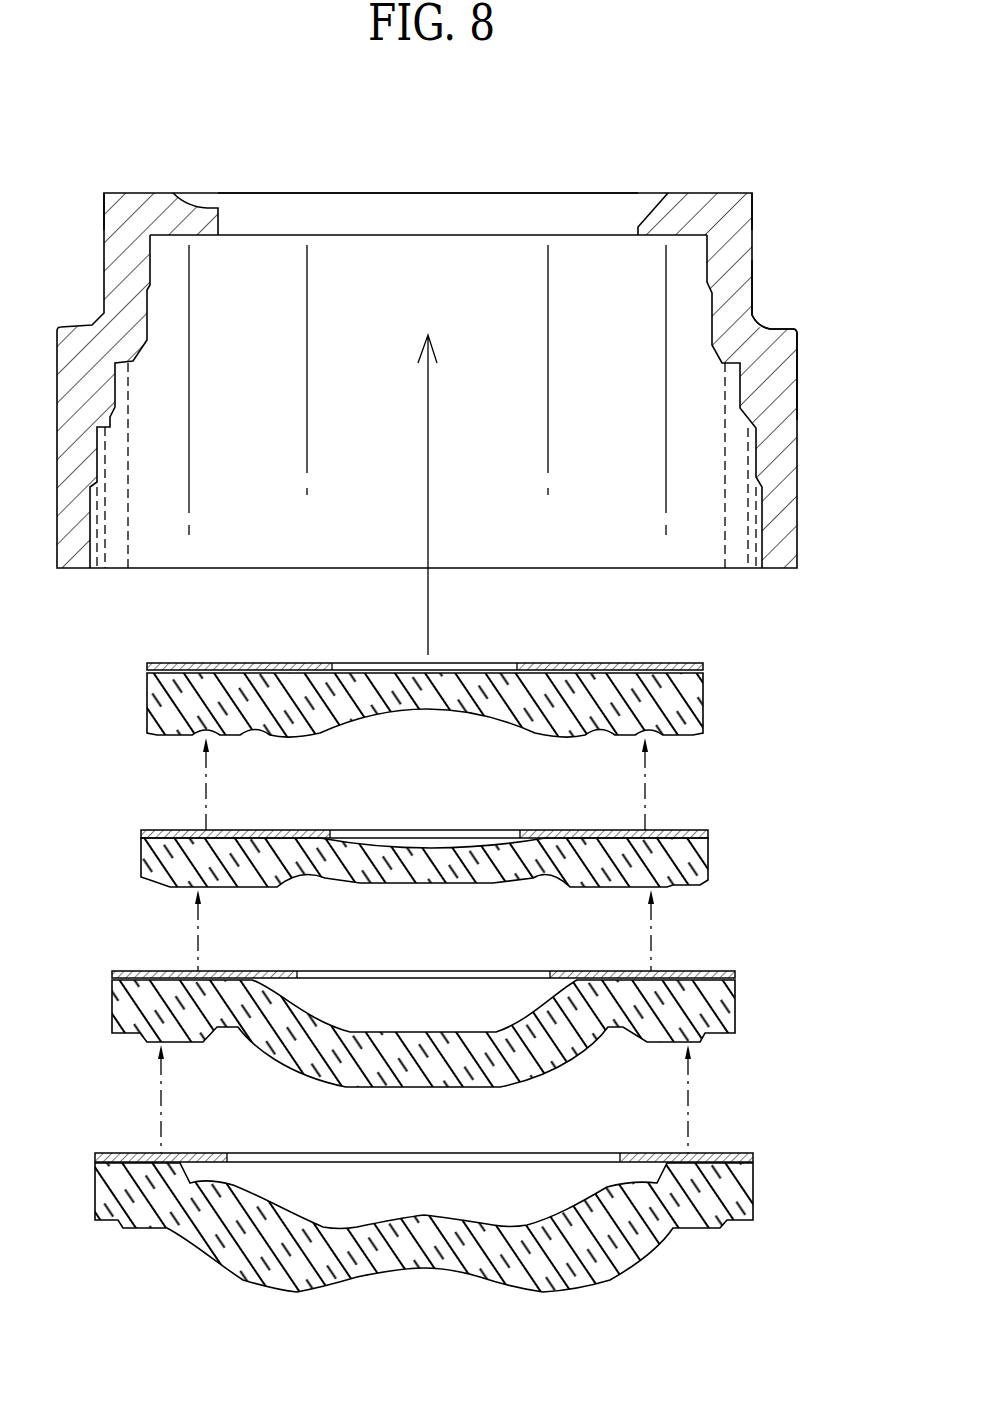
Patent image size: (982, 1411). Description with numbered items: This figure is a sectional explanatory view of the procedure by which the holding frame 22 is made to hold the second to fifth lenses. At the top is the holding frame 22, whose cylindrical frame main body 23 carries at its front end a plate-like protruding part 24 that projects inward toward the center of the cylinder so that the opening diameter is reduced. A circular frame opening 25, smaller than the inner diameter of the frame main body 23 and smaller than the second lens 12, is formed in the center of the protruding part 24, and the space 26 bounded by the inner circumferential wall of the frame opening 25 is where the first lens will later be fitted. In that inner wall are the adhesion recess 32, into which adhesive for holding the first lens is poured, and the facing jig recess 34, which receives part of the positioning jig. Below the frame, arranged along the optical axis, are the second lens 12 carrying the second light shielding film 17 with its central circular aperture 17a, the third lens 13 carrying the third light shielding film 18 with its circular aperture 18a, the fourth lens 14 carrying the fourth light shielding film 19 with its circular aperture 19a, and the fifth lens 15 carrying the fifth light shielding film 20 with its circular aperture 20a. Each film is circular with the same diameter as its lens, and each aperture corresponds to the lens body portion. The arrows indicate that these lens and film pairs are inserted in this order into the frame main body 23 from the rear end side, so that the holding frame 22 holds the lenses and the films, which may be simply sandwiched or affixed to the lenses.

The second lens 12 is at (715, 698).
The third lens 13 is at (720, 858).
The fourth lens 14 is at (750, 1002).
The fifth lens 15 is at (765, 1188).
The second light shielding film 17 is at (447, 652).
The circular aperture 17a is at (470, 663).
The third light shielding film 18 is at (446, 820).
The circular aperture 18a is at (468, 830).
The fourth light shielding film 19 is at (447, 959).
The circular aperture 19a is at (467, 971).
The fifth light shielding film 20 is at (444, 1142).
The circular aperture 20a is at (470, 1153).
The holding frame 22 is at (760, 207).
The frame main body 23 is at (740, 293).
The protruding part 24 is at (163, 182).
The frame opening 25 is at (220, 222).
The space 26 is at (466, 184).
The adhesion recess 32 is at (192, 202).
The jig recess 34 is at (660, 202).